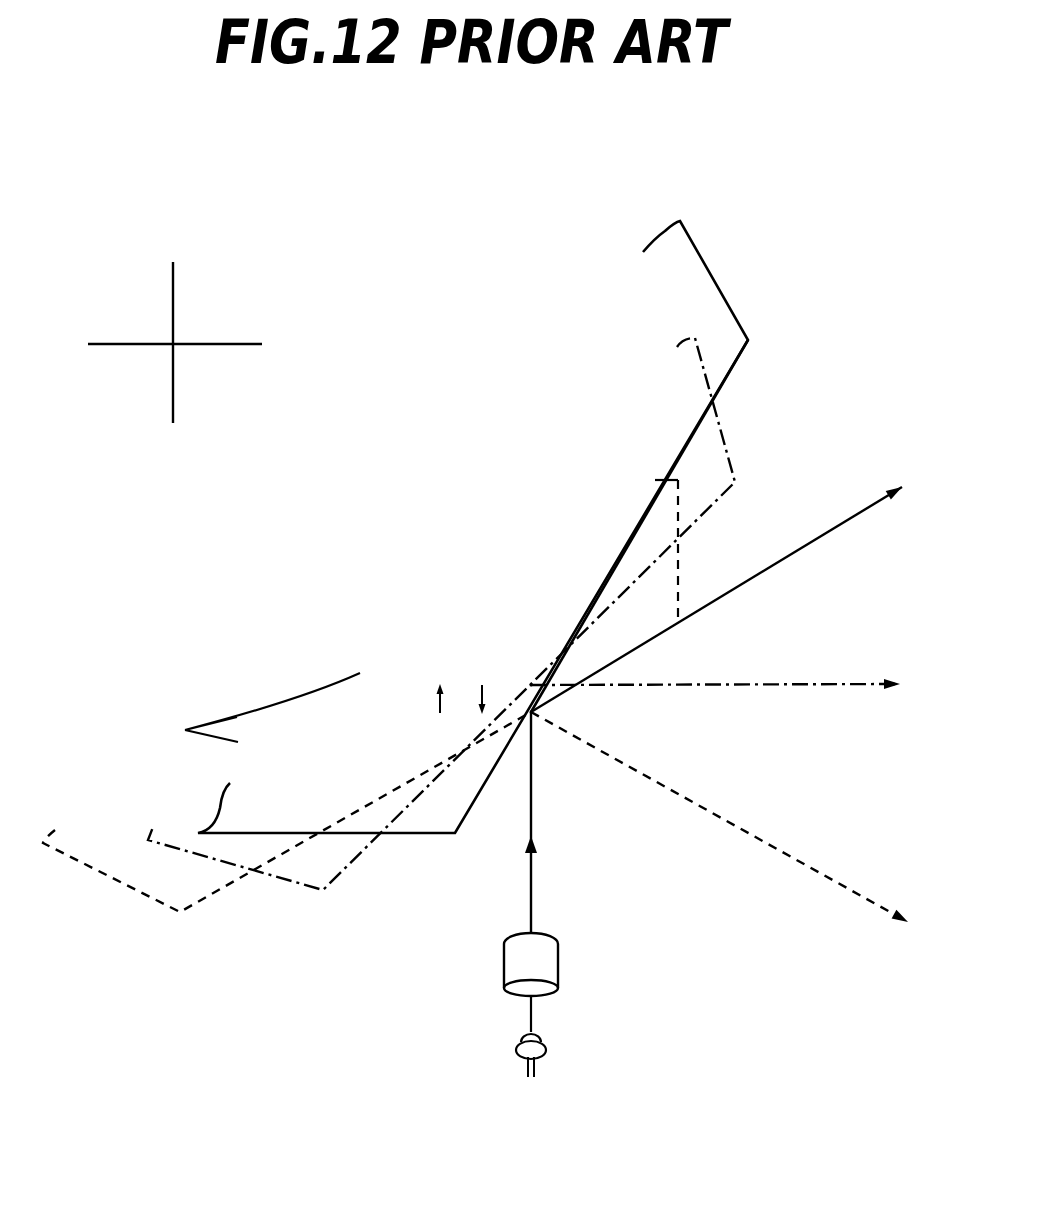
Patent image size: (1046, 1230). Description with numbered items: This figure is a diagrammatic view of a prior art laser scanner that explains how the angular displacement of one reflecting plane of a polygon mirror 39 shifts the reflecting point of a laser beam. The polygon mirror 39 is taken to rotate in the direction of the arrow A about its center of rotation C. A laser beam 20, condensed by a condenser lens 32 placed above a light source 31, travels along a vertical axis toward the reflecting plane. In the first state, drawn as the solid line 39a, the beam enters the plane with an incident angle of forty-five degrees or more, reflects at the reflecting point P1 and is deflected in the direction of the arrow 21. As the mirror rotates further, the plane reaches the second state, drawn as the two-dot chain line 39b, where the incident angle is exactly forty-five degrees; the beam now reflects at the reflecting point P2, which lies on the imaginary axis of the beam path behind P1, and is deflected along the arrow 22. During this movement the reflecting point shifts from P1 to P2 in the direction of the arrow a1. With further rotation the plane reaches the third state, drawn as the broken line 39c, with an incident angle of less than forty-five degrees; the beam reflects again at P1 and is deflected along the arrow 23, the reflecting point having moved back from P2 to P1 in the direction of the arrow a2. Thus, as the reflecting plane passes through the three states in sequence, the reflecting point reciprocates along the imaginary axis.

The polygon mirror 39 is at (707, 303).
The solid line 39a is at (730, 380).
The two-dot chain line 39b is at (708, 515).
The broken line 39c is at (222, 893).
The laser beam 20 is at (531, 878).
The arrow 21 is at (843, 520).
The arrow 22 is at (827, 683).
The arrow 23 is at (809, 867).
The light source 31 is at (542, 1050).
The condenser lens 32 is at (545, 960).
The center of rotation C is at (175, 346).
The arrow A is at (272, 707).
The reflecting point P1 is at (533, 714).
The reflecting point P2 is at (528, 683).
The arrow a1 is at (436, 688).
The arrow a2 is at (484, 688).